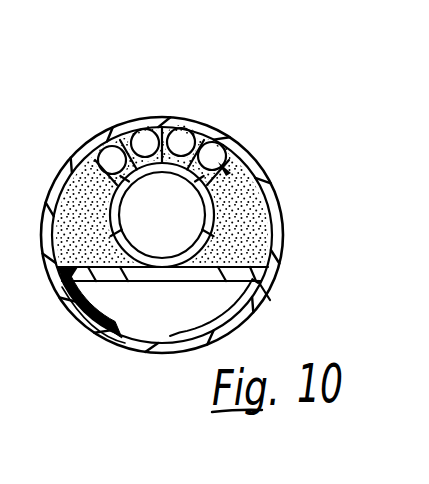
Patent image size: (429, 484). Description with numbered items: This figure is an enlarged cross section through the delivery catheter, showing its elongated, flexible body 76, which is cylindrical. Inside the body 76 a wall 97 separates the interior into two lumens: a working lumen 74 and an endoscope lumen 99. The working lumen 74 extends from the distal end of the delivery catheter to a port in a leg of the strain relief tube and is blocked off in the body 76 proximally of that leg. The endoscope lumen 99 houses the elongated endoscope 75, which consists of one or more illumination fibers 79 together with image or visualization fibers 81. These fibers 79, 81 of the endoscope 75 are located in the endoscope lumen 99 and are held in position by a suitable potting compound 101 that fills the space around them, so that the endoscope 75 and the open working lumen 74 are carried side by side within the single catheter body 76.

The working lumen 74 is at (240, 296).
The elongated endoscope 75 is at (205, 174).
The body 76 is at (163, 118).
The illumination fibers 79 is at (116, 149).
The image fibers 81 is at (190, 222).
The wall 97 is at (112, 282).
The endoscope lumen 99 is at (266, 238).
The potting compound 101 is at (59, 168).